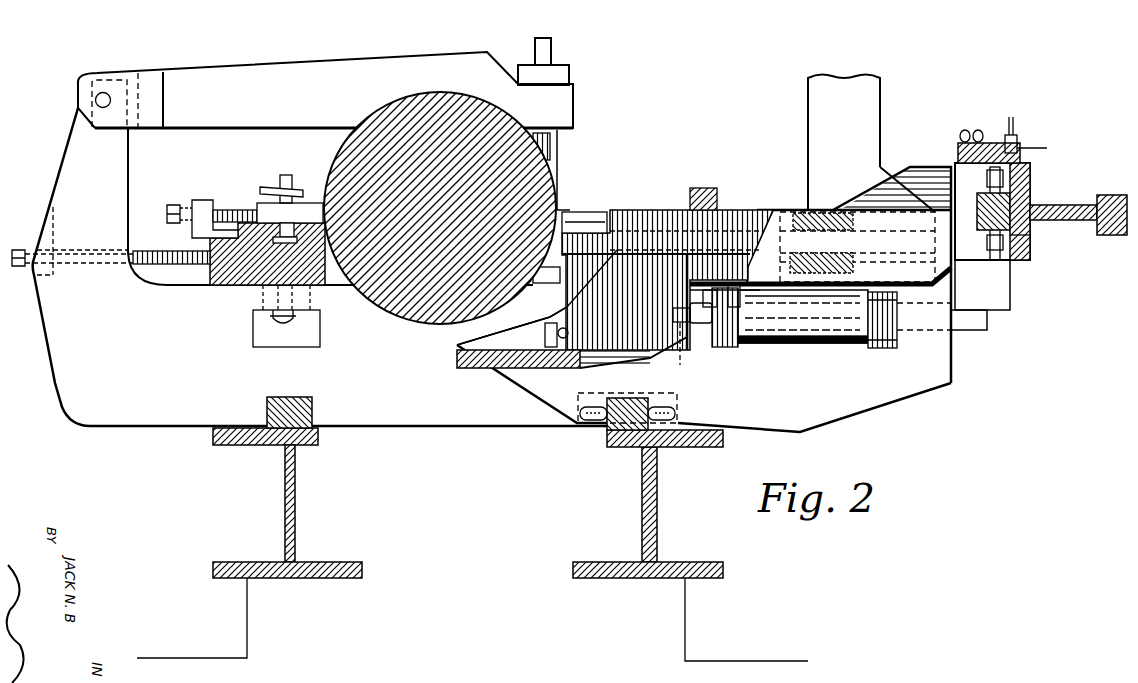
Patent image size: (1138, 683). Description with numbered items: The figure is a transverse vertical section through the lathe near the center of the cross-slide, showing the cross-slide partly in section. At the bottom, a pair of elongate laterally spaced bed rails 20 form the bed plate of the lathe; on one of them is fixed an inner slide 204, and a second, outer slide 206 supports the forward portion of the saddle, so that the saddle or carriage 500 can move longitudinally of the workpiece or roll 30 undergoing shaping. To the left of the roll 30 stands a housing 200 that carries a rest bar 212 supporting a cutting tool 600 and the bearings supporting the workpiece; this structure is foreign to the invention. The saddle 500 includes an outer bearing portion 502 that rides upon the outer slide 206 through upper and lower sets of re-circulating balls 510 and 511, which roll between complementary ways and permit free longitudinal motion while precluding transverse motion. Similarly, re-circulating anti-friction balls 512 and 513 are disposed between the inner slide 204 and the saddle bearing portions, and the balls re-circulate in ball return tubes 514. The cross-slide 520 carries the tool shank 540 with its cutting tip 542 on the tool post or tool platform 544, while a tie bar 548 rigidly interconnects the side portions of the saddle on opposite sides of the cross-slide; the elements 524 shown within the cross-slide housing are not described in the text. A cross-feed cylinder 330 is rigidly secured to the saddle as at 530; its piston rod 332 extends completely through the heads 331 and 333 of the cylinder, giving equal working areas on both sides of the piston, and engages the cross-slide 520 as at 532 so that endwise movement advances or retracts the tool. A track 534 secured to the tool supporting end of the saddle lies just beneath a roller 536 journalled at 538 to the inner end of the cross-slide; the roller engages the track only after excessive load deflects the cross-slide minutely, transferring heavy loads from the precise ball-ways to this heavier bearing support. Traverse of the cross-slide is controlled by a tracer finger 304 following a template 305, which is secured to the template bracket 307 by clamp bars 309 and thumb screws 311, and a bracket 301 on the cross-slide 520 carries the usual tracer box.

The bed rails 20 is at (292, 519).
The workpiece or roll 30 is at (448, 103).
The housing 200 is at (392, 423).
The inner slide 204 is at (630, 432).
The outer slide 206 is at (1035, 208).
The rest bar 212 is at (205, 268).
The bracket 301 is at (815, 112).
The tracer finger 304 is at (1013, 138).
The template 305 is at (1037, 146).
The template bracket 307 is at (965, 152).
The clamp bars 309 is at (985, 142).
The thumb screws 311 is at (960, 130).
The cross-feed cylinder 330 is at (820, 327).
The cylinder head 331 is at (716, 330).
The piston rod 332 is at (697, 335).
The cylinder head 333 is at (873, 340).
The saddle or carriage 500 is at (757, 403).
The outer bearing portion 502 is at (1007, 170).
The re-circulating balls 510 is at (975, 176).
The re-circulating balls 511 is at (1010, 240).
The re-circulating anti-friction balls 512 is at (604, 425).
The re-circulating anti-friction balls 513 is at (660, 432).
The ball return tubes 514 is at (1007, 187).
The cross-slide 520 is at (758, 216).
The spring 524 is at (783, 214).
The cylinder mounting 530 is at (893, 338).
The piston rod connection 532 is at (673, 353).
The track 534 is at (475, 343).
The roller 536 is at (548, 312).
The roller journal 538 is at (536, 368).
The tool shank 540 is at (587, 222).
The cutting tip 542 is at (565, 210).
The tool post or tool platform 544 is at (593, 233).
The tie bar 548 is at (705, 189).
The cutting tool 600 is at (315, 212).